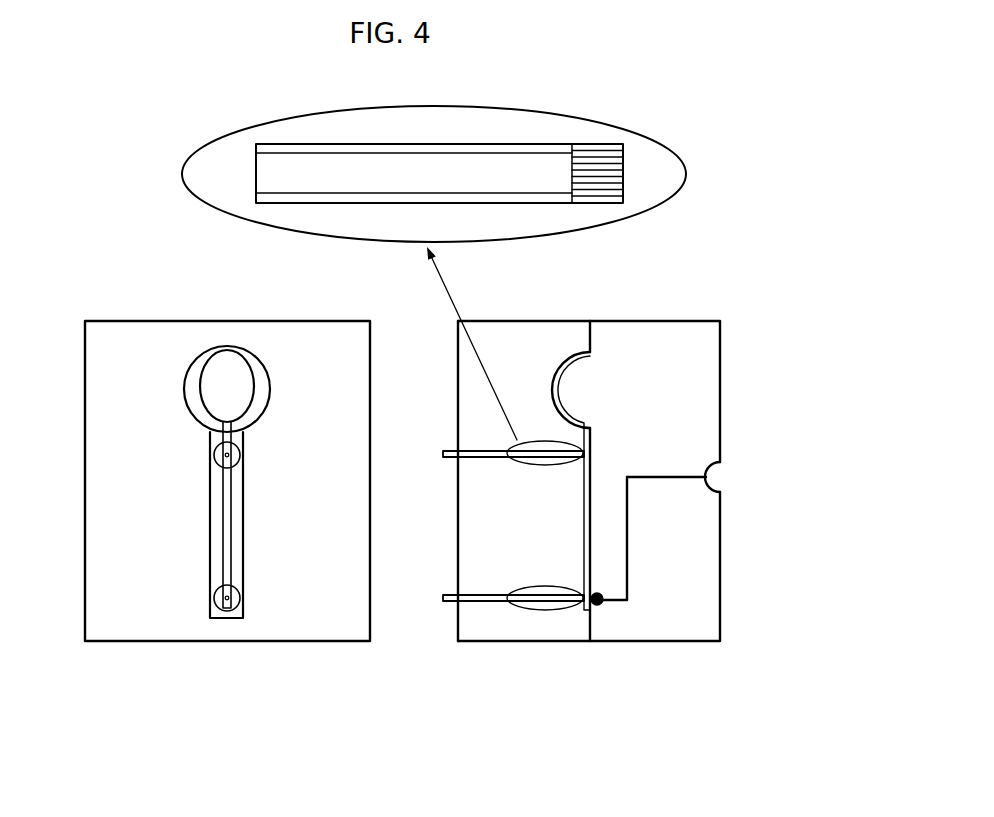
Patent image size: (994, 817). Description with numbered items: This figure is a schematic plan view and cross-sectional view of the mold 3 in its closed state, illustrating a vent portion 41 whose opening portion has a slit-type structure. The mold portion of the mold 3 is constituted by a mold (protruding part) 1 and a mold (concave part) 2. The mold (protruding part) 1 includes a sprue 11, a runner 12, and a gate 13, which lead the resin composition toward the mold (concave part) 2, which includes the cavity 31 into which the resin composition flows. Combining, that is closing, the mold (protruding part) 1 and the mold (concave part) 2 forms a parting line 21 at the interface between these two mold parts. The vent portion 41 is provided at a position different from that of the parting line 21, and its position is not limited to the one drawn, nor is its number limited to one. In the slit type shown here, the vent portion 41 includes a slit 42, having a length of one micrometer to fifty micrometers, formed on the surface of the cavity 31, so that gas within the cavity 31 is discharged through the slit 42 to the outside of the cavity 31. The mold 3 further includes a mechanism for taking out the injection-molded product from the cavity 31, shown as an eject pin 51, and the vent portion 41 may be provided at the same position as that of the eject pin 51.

The mold (protruding part) 1 is at (720, 340).
The mold (concave part) 2 is at (460, 352).
The mold 3 is at (85, 360).
The sprue 11 is at (670, 476).
The runner 12 is at (628, 527).
The gate 13 is at (597, 606).
The parting line 21 is at (202, 405).
The cavity 31 is at (558, 387).
The vent portion 41 is at (515, 203).
The slit 42 is at (592, 144).
The eject pin 51 is at (240, 453).